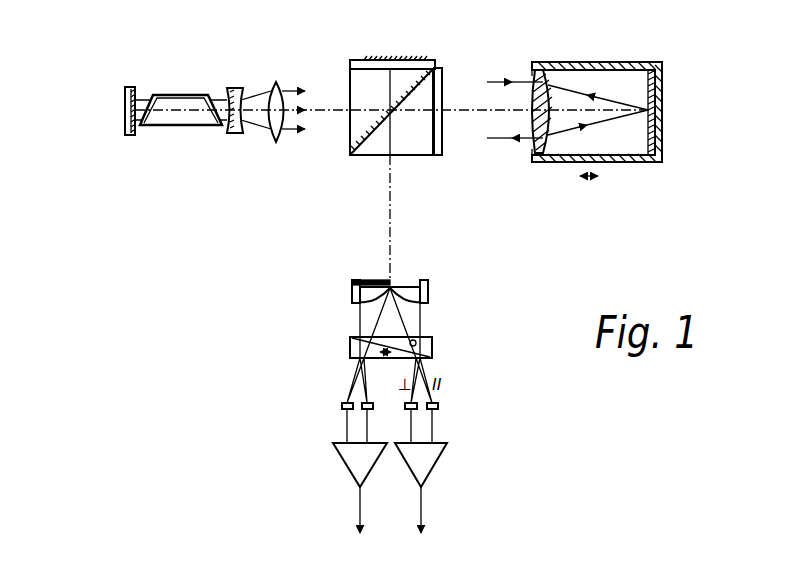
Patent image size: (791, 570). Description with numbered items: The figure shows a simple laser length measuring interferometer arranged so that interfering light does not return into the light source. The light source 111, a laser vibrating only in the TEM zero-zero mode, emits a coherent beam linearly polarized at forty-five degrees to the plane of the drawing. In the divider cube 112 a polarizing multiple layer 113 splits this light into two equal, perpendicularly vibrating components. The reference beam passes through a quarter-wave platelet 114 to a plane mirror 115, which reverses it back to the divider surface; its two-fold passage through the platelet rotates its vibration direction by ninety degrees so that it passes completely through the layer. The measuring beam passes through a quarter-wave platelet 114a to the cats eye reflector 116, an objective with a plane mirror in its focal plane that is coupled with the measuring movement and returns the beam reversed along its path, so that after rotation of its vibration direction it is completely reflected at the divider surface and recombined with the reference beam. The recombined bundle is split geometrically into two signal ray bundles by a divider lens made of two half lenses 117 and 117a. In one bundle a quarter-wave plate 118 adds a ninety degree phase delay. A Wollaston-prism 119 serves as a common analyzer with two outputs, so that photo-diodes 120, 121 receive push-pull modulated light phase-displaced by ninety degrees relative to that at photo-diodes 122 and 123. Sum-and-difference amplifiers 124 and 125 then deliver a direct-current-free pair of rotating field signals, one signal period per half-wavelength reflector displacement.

The light source 111 is at (282, 74).
The divider cube 112 is at (378, 143).
The polarizing multiple layer 113 is at (348, 133).
The λ/4 platelet 114 is at (360, 62).
The λ/4 platelet 114a is at (436, 140).
The plane mirror 115 is at (415, 58).
The cats eye reflector 116 is at (585, 80).
The half lens 117 is at (352, 295).
The half lens 117a is at (428, 295).
The λ/4 plate 118 is at (360, 279).
The Wollaston-prism 119 is at (433, 347).
The photo-diode 120 is at (345, 401).
The photo-diode 121 is at (362, 412).
The photo-diode 122 is at (433, 401).
The photo-diode 123 is at (415, 411).
The sum-and-difference amplifier 124 is at (346, 467).
The sum-and-difference amplifier 125 is at (436, 467).